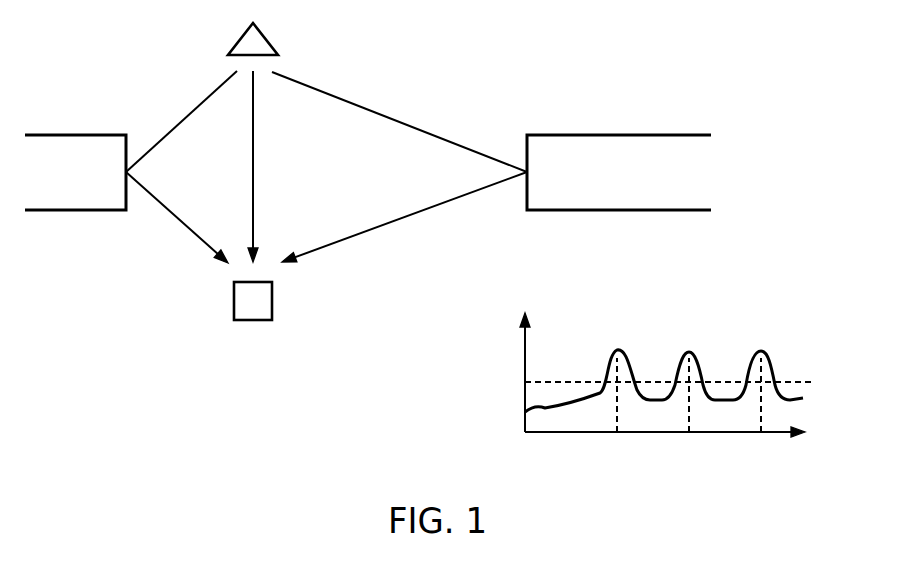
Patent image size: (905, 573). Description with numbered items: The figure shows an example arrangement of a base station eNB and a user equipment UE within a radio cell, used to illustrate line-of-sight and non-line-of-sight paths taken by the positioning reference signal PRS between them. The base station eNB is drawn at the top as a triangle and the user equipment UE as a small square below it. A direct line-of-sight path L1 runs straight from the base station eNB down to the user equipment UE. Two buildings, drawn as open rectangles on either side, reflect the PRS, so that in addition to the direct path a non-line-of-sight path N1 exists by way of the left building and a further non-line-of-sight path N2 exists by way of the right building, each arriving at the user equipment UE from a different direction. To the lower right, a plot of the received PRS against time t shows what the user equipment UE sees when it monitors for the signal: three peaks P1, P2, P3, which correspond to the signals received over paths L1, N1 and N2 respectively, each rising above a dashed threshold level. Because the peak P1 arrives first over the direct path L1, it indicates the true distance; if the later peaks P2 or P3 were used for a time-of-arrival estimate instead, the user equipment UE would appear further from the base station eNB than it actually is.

The base station eNB is at (253, 27).
The user equipment UE is at (253, 321).
The NLoS path N1 is at (181, 167).
The NLoS path N2 is at (399, 167).
The LoS path L1 is at (268, 166).
The positioning reference signal PRS is at (658, 357).
The peak P1 is at (616, 374).
The peak P2 is at (688, 374).
The peak P3 is at (760, 374).
The time axis t is at (673, 430).